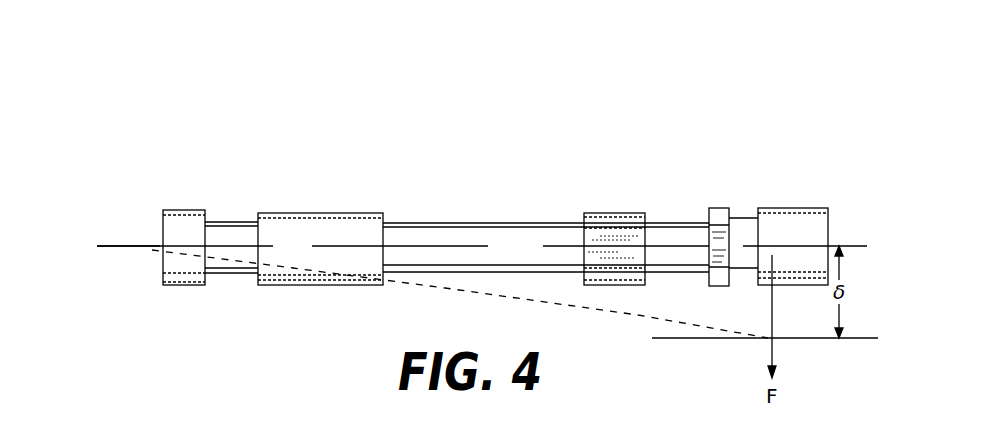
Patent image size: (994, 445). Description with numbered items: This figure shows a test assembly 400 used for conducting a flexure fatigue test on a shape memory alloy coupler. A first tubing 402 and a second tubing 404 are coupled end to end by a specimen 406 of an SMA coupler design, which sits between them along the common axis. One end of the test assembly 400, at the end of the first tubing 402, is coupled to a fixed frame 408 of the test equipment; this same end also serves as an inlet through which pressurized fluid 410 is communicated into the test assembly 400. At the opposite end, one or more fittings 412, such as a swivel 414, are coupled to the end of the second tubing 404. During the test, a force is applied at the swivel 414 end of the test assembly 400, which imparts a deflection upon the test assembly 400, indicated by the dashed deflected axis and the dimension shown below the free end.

The test assembly 400 is at (565, 120).
The first tubing 402 is at (233, 232).
The second tubing 404 is at (486, 232).
The specimen of an SMA coupler design 406 is at (342, 228).
The fixed frame 408 is at (183, 221).
The pressurized fluid 410 is at (123, 250).
The fittings 412 is at (798, 227).
The swivel 414 is at (815, 215).